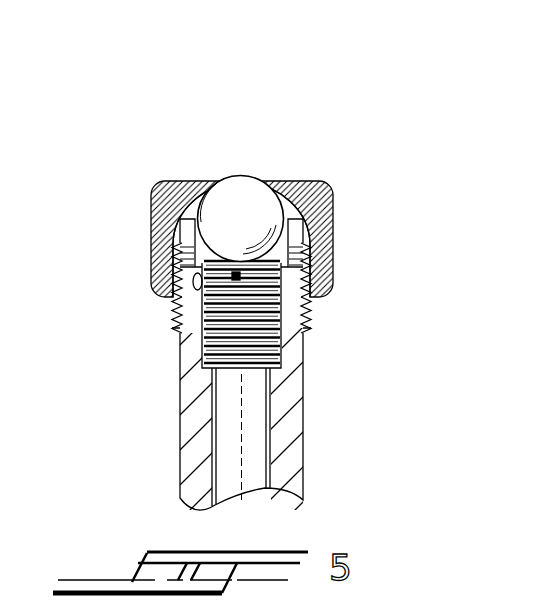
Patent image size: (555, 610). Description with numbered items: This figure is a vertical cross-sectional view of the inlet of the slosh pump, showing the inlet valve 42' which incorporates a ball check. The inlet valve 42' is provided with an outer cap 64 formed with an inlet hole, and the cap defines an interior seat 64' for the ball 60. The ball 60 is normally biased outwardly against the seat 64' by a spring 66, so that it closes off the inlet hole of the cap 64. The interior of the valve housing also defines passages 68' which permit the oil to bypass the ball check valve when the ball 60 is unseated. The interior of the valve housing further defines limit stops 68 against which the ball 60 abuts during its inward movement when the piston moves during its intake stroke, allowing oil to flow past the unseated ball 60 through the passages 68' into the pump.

The inlet valve 42' is at (344, 300).
The ball 60 is at (227, 192).
The outer cap 64 is at (275, 201).
The interior seat 64' is at (241, 193).
The spring 66 is at (282, 345).
The limit stops 68 is at (300, 264).
The passages 68' is at (166, 316).